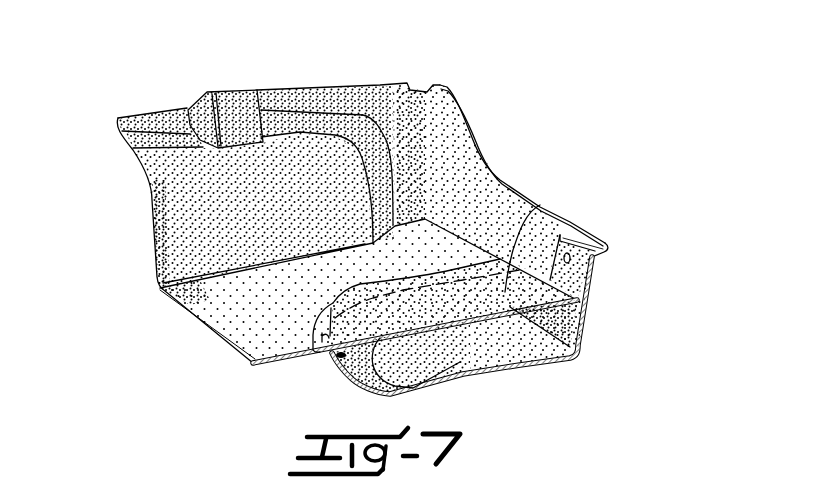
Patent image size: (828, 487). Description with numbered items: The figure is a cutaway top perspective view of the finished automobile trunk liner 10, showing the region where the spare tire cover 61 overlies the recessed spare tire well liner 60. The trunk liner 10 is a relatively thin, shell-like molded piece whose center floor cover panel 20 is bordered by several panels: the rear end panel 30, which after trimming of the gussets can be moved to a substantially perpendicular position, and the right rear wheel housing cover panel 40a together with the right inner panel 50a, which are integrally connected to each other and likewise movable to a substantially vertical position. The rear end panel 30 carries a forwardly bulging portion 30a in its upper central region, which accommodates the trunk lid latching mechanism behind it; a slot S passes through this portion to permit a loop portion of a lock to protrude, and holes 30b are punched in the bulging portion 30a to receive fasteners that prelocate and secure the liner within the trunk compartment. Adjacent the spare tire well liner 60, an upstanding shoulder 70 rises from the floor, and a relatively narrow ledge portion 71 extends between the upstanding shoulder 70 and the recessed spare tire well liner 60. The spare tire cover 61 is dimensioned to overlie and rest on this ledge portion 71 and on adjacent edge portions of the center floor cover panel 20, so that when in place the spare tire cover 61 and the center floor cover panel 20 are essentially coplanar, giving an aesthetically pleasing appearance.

The trunk liner 10 is at (580, 143).
The center floor cover panel 20 is at (240, 328).
The rear end panel 30 is at (497, 198).
The bulging portion 30a is at (594, 242).
The holes 30b is at (568, 251).
The right rear wheel housing cover panel 40a is at (172, 229).
The right inner panel 50a is at (390, 103).
The spare tire well liner 60 is at (460, 362).
The spare tire cover 61 is at (540, 205).
The upstanding shoulder 70 is at (333, 303).
The ledge portion 71 is at (323, 357).
The slot S is at (594, 257).